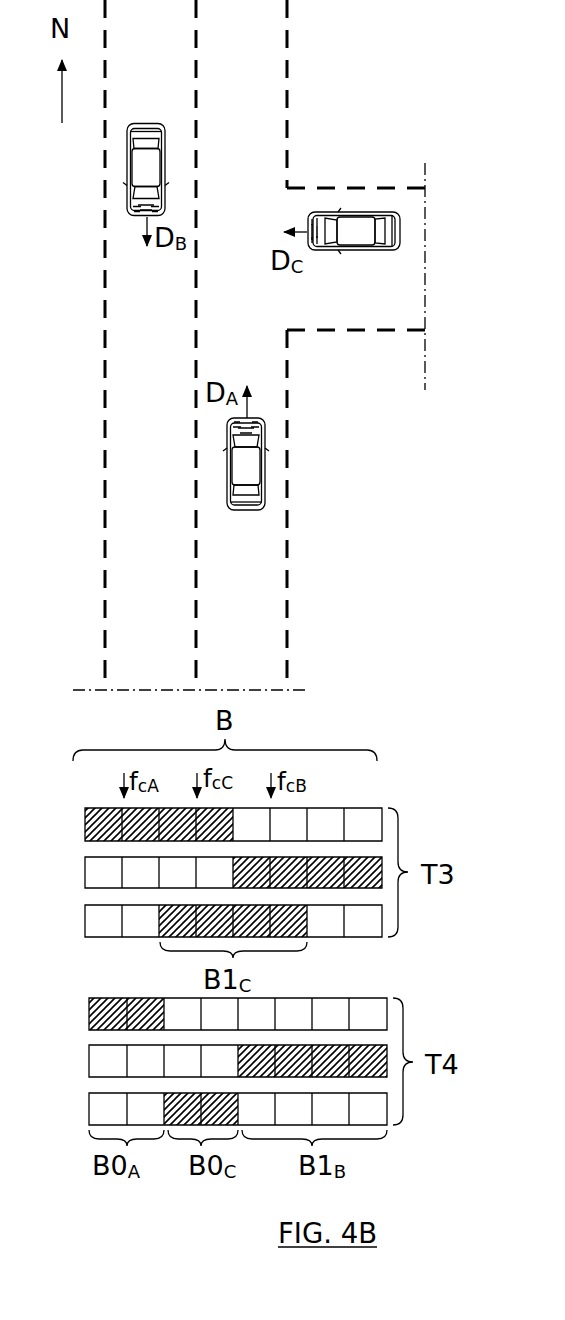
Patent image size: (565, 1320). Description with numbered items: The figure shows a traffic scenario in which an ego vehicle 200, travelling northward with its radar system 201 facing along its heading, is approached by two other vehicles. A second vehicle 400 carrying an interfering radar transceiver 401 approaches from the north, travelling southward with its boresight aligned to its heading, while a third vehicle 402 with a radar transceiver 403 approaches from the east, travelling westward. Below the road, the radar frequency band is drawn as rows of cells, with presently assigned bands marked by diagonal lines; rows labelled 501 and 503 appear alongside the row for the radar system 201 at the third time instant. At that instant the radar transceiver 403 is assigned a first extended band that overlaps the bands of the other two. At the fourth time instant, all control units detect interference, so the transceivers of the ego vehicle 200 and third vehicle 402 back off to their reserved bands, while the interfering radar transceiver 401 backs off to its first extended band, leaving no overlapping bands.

The ego vehicle 200 is at (250, 468).
The radar system 201 is at (260, 422).
The second vehicle 400 is at (143, 163).
The interfering radar transceiver 401 is at (128, 208).
The third vehicle 402 is at (360, 232).
The radar transceiver 403 is at (322, 208).
The communication device 501 is at (206, 873).
The communication device 503 is at (206, 921).